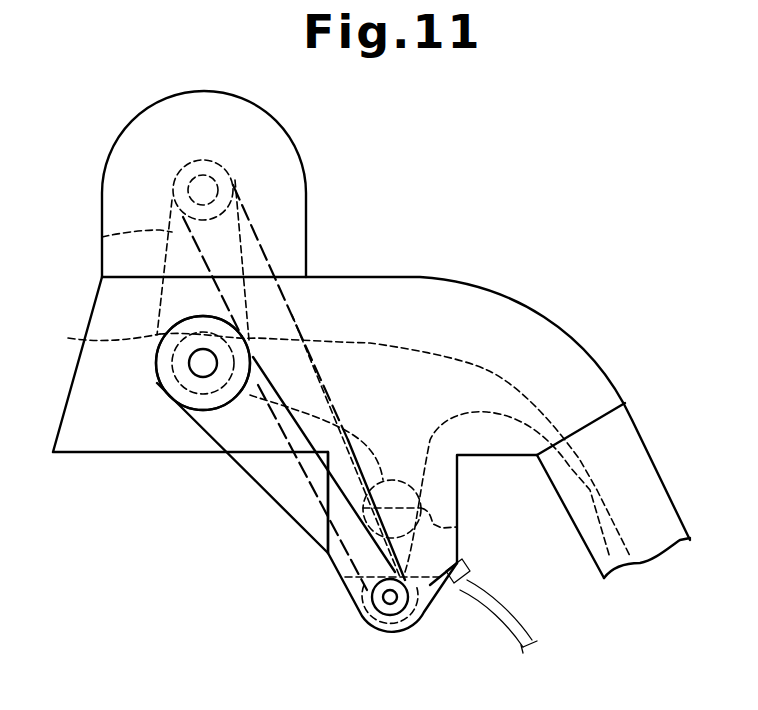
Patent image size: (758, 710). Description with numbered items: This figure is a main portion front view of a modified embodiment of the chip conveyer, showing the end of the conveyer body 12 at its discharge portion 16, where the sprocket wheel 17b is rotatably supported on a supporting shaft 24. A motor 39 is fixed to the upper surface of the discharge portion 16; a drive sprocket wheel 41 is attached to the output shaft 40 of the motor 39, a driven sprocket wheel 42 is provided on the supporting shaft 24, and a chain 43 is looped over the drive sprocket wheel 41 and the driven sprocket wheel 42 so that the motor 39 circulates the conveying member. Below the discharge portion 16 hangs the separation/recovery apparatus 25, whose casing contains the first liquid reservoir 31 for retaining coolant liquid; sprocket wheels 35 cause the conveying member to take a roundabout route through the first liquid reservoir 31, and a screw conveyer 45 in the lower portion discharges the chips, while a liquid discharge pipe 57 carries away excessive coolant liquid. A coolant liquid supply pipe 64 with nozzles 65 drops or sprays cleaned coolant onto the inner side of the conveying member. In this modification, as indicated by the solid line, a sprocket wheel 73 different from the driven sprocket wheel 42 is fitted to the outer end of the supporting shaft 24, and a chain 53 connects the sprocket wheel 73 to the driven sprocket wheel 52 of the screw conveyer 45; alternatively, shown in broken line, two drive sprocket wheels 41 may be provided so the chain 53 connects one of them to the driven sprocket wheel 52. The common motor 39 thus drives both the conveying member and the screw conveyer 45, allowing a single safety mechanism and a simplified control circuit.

The conveyer body 12 is at (660, 470).
The discharge portion 16 is at (288, 276).
The sprocket wheel 17b is at (87, 338).
The supporting shaft 24 is at (185, 373).
The separation/recovery apparatus 25 is at (326, 537).
The first liquid reservoir 31 is at (457, 527).
The sprocket wheel 35 is at (392, 480).
The motor 39 is at (284, 126).
The upper pulley 40 is at (223, 167).
The drive sprocket wheel 41 is at (237, 217).
The driven sprocket wheel 42 is at (203, 363).
The chain 43 is at (102, 237).
The screw conveyer 45 is at (353, 616).
The driven sprocket wheel 52 is at (413, 614).
The chain 53 is at (287, 310).
The liquid discharge pipe 57 is at (470, 572).
The coolant liquid supply pipe 64 is at (444, 390).
The nozzle 65 is at (455, 385).
The sprocket wheel 73 is at (203, 410).